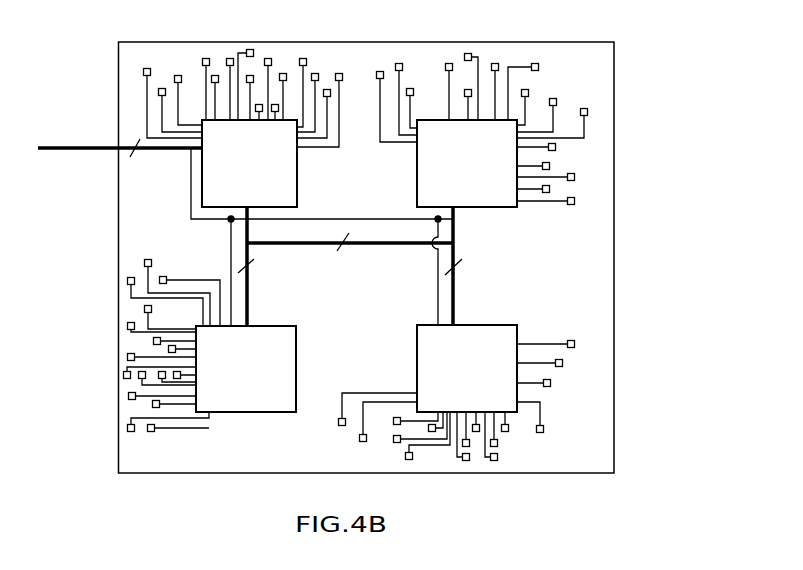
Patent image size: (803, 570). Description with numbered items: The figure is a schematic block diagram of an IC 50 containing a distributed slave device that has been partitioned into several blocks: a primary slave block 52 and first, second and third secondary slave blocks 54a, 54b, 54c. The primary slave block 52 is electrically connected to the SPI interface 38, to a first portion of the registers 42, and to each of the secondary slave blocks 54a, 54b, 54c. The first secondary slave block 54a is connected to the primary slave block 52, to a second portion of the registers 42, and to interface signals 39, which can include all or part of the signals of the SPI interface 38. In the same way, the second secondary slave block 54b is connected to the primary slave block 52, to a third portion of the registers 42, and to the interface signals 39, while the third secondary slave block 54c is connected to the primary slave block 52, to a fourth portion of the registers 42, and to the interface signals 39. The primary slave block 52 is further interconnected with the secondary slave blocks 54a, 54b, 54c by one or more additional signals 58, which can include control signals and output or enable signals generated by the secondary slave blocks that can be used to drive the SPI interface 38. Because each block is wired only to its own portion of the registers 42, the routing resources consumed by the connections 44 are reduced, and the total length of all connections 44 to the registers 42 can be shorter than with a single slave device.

The SPI interface 38 is at (68, 148).
The interface signals 39 is at (191, 193).
The registers 42 is at (338, 73).
The connections 44 is at (342, 93).
The IC 50 is at (699, 98).
The primary slave block 52 is at (297, 178).
The first secondary slave block 54a is at (482, 207).
The second secondary slave block 54b is at (280, 326).
The third secondary slave block 54c is at (485, 325).
The additional signals 58 is at (397, 243).